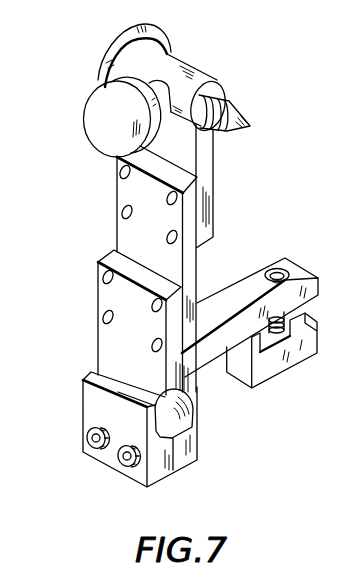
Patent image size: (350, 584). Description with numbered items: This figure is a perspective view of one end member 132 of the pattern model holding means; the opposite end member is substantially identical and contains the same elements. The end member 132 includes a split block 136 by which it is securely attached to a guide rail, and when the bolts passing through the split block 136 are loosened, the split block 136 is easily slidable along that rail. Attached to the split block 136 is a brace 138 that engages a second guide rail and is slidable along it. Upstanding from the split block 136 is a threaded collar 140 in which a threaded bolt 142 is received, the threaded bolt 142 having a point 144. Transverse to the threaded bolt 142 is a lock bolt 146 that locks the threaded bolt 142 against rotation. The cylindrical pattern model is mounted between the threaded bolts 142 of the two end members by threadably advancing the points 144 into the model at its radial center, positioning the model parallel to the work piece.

The end member 132 is at (100, 230).
The split block 136 is at (84, 394).
The brace 138 is at (227, 291).
The threaded collar 140 is at (208, 75).
The threaded bolt 142 is at (110, 44).
The point 144 is at (250, 126).
The lock bolt 146 is at (102, 144).